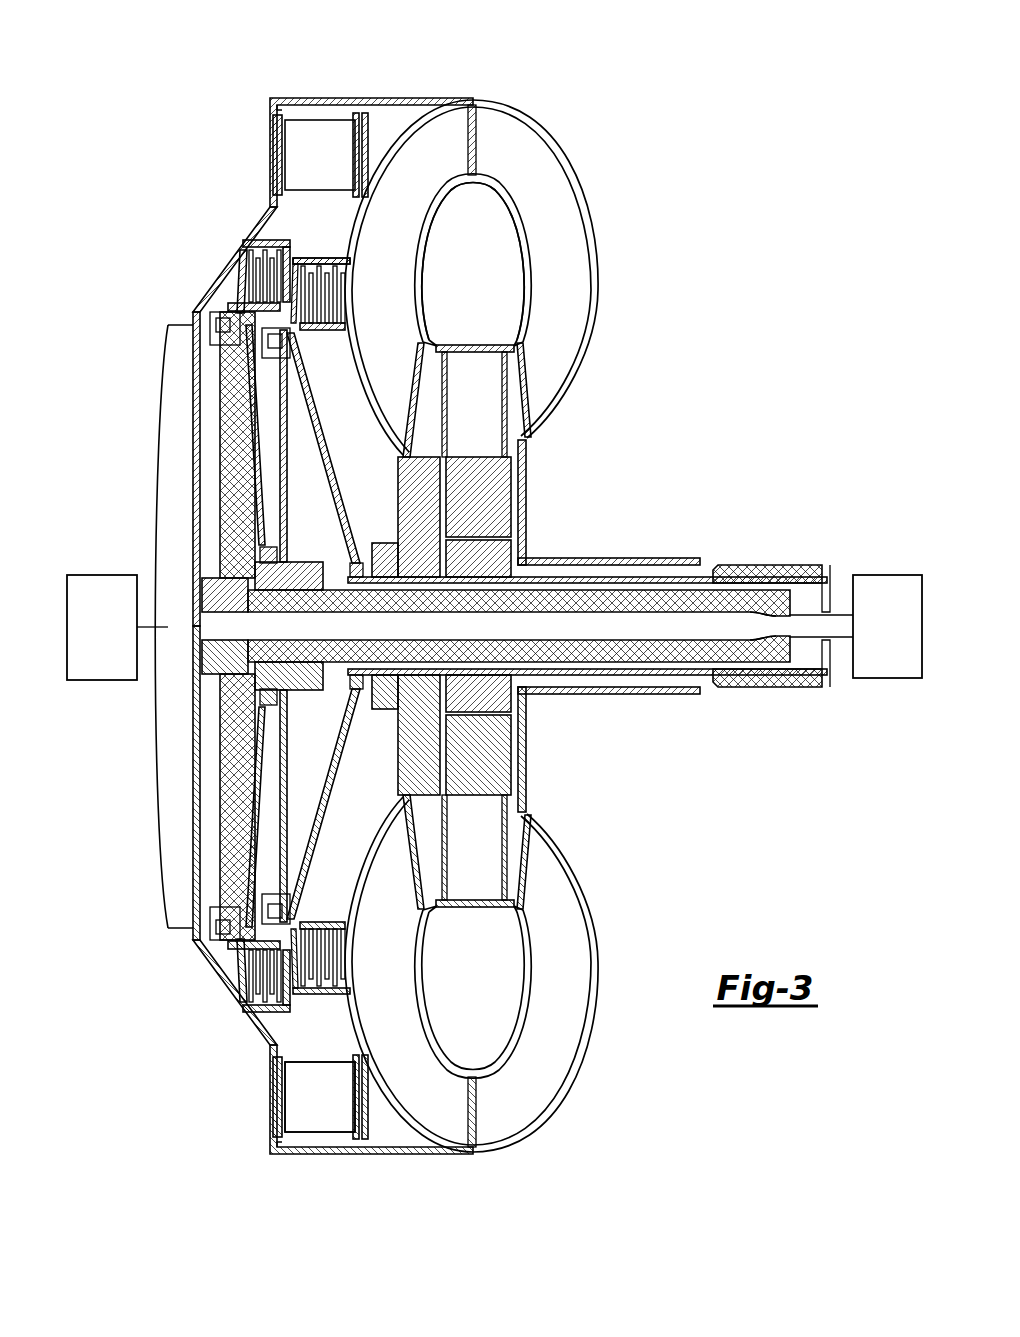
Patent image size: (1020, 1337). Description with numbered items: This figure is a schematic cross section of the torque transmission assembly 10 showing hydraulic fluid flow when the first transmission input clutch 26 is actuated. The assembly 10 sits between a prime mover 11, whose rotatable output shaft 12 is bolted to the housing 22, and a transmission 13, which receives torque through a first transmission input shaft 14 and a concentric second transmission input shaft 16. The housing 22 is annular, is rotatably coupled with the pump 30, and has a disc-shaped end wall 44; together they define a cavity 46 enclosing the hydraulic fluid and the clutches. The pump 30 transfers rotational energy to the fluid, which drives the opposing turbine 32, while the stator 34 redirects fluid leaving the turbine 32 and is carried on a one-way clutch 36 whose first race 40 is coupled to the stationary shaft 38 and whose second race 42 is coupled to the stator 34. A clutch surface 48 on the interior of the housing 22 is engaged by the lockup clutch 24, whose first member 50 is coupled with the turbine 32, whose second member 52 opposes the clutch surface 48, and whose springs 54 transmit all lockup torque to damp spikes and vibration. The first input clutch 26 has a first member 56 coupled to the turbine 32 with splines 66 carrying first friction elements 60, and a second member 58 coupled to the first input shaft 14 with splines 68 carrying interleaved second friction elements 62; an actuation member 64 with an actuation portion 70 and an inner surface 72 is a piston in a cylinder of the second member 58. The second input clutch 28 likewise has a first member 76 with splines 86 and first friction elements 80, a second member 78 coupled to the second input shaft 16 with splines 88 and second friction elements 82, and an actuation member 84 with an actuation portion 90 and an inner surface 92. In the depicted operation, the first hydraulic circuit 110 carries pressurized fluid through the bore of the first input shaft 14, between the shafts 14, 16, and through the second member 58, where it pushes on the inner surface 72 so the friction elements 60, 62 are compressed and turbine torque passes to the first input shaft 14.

The torque transmission assembly 10 is at (623, 225).
The prime mover 11 is at (108, 645).
The rotatable output shaft 12 is at (192, 322).
The transmission 13 is at (895, 645).
The first transmission input shaft 14 is at (612, 663).
The second transmission input shaft 16 is at (676, 676).
The housing 22 is at (423, 98).
The lockup clutch 24 is at (300, 189).
The first transmission input clutch 26 is at (250, 1020).
The second transmission input clutch 28 is at (320, 254).
The pump 30 is at (515, 256).
The turbine 32 is at (431, 247).
The stator 34 is at (510, 388).
The one-way clutch 36 is at (475, 453).
The stationary shaft 38 is at (830, 585).
The first race 40 is at (505, 540).
The second race 42 is at (528, 445).
The end wall 44 is at (186, 932).
The cavity 46 is at (386, 105).
The clutch surface 48 is at (282, 108).
The first member 50 is at (369, 1132).
The second member 52 is at (282, 128).
The springs 54 is at (338, 1133).
The first member 56 is at (262, 1020).
The second member 58 is at (162, 485).
The first friction elements 60 is at (290, 1000).
The second friction elements 62 is at (237, 990).
The actuation member 64 is at (263, 492).
The splines 66 is at (243, 243).
The splines 68 is at (246, 307).
The actuation portion 70 is at (238, 295).
The inner surface 72 is at (232, 440).
The first member 76 is at (320, 988).
The second member 78 is at (288, 745).
The first friction elements 80 is at (336, 330).
The second friction elements 82 is at (270, 280).
The actuation member 84 is at (334, 462).
The splines 86 is at (340, 272).
The splines 88 is at (299, 922).
The actuation portion 90 is at (270, 944).
The inner surface 92 is at (338, 752).
The first hydraulic circuit 110 is at (795, 645).